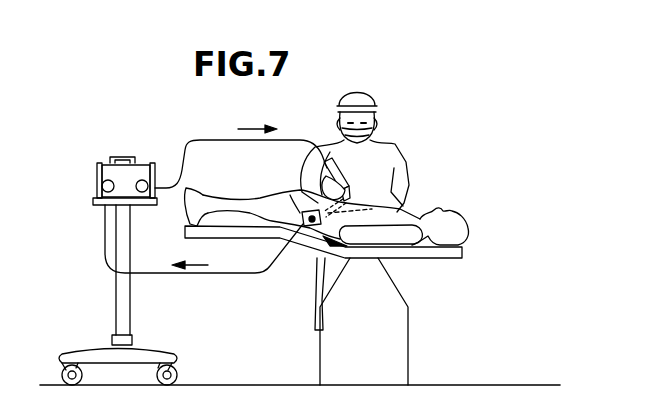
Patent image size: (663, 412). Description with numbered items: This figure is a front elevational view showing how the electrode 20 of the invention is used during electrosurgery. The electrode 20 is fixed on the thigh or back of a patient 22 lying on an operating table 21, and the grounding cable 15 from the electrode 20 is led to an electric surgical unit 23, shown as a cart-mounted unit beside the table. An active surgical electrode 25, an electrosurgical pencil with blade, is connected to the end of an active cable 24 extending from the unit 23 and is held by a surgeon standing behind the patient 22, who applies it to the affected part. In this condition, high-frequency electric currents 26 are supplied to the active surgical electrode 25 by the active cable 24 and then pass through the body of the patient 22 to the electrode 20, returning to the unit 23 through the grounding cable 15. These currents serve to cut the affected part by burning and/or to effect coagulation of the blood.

The grounding cable 15 is at (203, 273).
The electrode 20 is at (306, 210).
The operating table 21 is at (443, 255).
The patient 22 is at (293, 210).
The electric surgical unit 23 is at (133, 180).
The active cable 24 is at (242, 140).
The active surgical electrode 25 is at (340, 173).
The high-frequency electric currents 26 is at (362, 217).